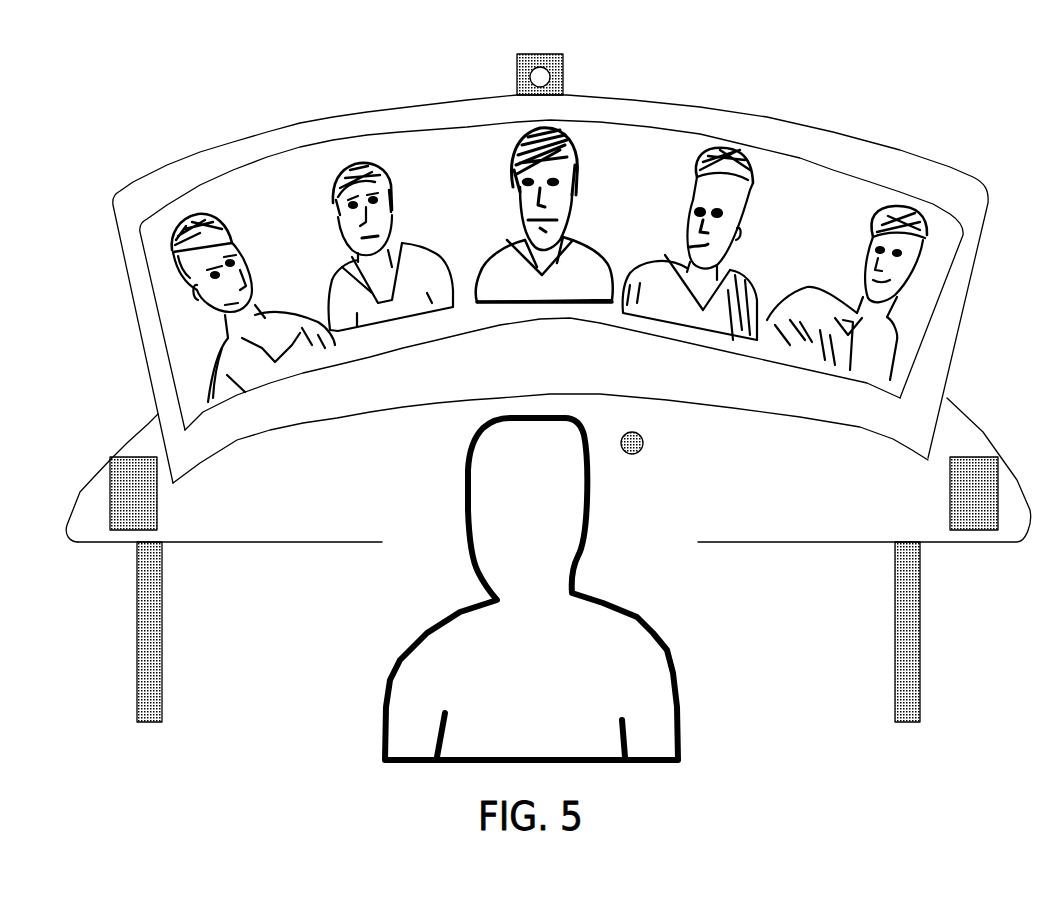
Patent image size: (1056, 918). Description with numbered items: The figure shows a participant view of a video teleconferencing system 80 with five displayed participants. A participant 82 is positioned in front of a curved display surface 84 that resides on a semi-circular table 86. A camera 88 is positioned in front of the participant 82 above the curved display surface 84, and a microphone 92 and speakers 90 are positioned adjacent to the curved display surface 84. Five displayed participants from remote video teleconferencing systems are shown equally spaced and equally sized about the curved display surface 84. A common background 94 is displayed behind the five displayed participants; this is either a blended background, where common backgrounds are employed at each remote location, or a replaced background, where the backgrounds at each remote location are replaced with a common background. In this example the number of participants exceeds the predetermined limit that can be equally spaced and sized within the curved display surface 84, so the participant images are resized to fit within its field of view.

The video teleconferencing system 80 is at (885, 88).
The participant 82 is at (410, 598).
The curved display surface 84 is at (958, 171).
The semi-circular table 86 is at (983, 434).
The camera 88 is at (541, 56).
The speakers 90 is at (157, 518).
The microphone 92 is at (634, 432).
The common background 94 is at (637, 130).